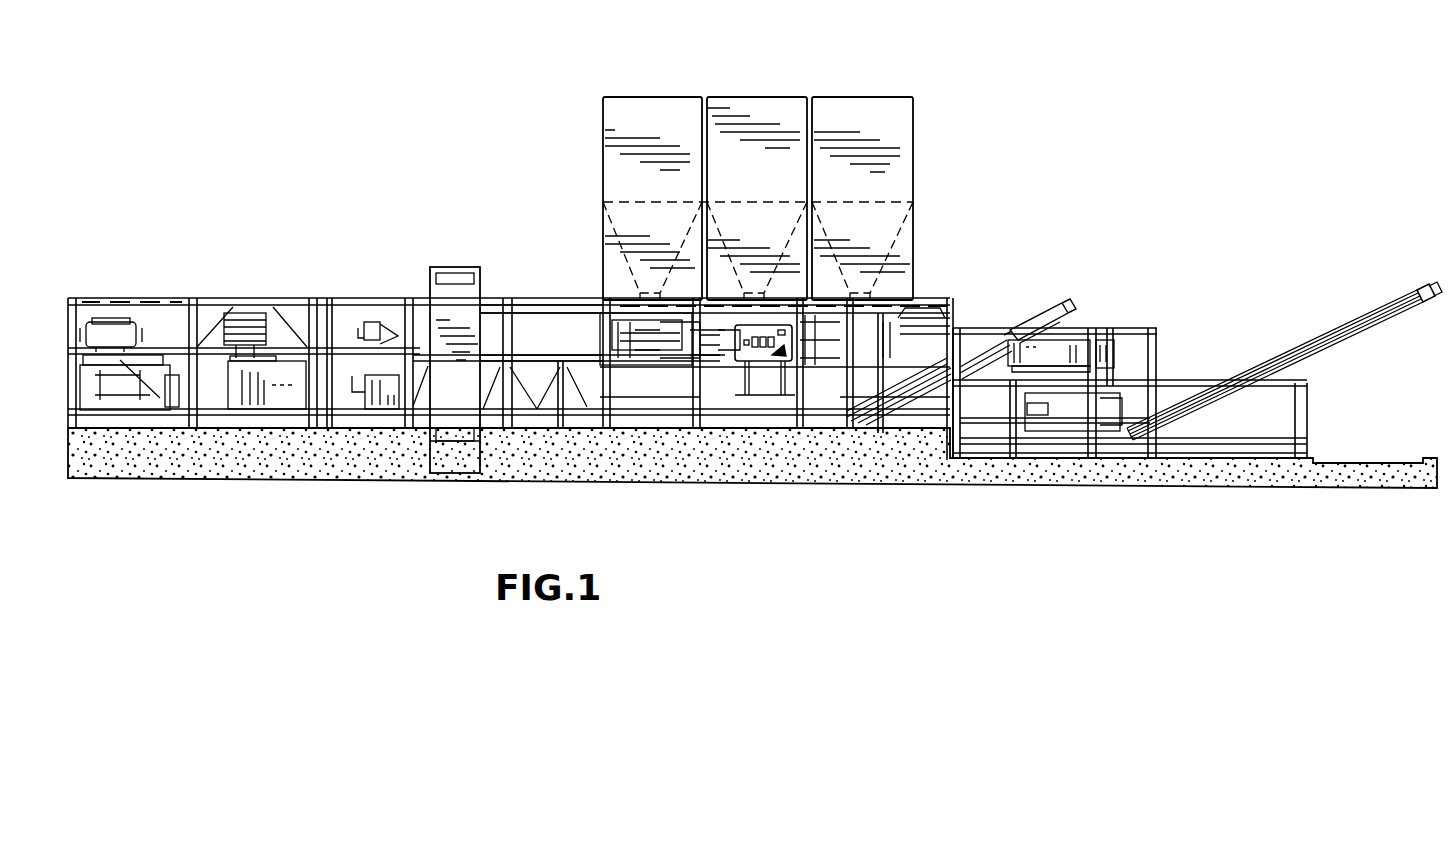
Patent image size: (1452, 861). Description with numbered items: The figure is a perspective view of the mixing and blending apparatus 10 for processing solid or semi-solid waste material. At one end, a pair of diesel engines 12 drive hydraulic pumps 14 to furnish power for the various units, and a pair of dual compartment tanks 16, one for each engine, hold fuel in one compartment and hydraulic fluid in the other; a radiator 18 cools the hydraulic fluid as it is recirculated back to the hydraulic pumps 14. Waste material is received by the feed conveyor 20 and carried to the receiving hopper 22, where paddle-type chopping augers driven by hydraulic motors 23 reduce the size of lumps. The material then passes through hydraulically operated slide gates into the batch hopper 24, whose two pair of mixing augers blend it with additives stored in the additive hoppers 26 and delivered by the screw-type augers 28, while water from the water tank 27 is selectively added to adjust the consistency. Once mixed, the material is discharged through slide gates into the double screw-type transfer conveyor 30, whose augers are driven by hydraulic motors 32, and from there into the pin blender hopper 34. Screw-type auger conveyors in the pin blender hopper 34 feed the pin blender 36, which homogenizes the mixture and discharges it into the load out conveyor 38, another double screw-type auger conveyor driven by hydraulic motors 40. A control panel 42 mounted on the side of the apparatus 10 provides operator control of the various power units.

The apparatus 10 is at (297, 518).
The diesel engines 12 is at (145, 312).
The hydraulic pumps 14 is at (160, 362).
The dual compartment tanks 16 is at (284, 366).
The radiator 18 is at (247, 312).
The feed conveyor 20 is at (446, 473).
The receiving hopper 22 is at (492, 316).
The hydraulic motors 23 is at (365, 322).
The batch hopper 24 is at (725, 386).
The additive hoppers 26 is at (662, 103).
The water tank 27 is at (380, 418).
The screw-type augers 28 is at (612, 313).
The transfer conveyor 30 is at (1030, 326).
The hydraulic motors 32 is at (1068, 306).
The pin blender hopper 34 is at (1100, 328).
The pin blender 36 is at (1060, 416).
The load out conveyor 38 is at (1270, 370).
The hydraulic motors 40 is at (1420, 293).
The control panel 42 is at (773, 364).